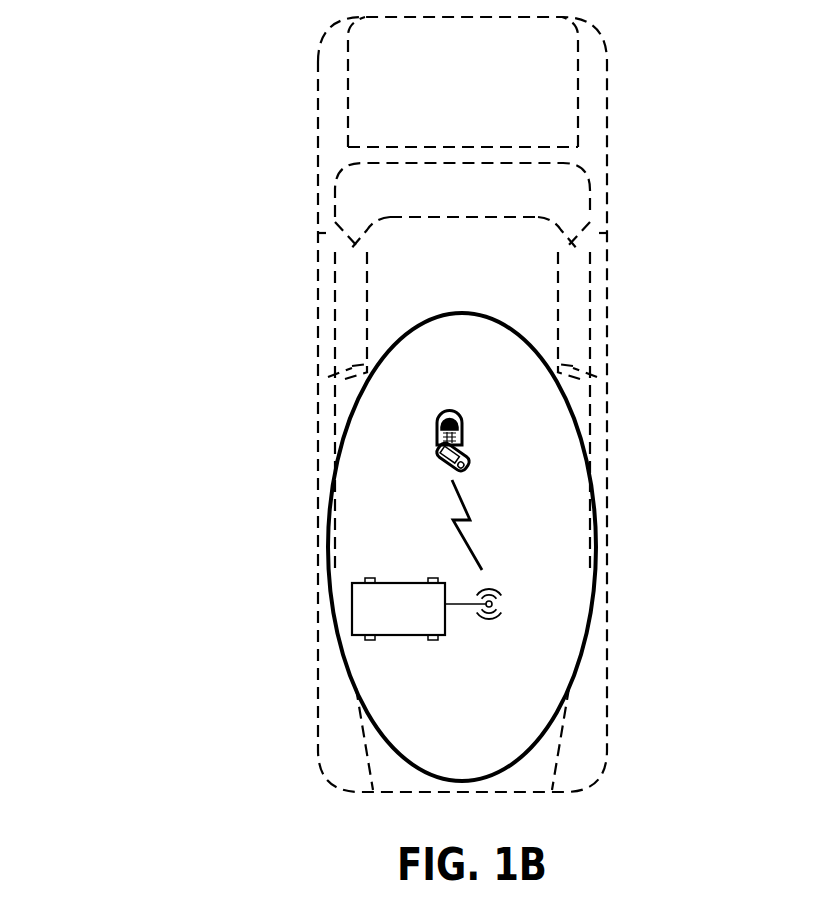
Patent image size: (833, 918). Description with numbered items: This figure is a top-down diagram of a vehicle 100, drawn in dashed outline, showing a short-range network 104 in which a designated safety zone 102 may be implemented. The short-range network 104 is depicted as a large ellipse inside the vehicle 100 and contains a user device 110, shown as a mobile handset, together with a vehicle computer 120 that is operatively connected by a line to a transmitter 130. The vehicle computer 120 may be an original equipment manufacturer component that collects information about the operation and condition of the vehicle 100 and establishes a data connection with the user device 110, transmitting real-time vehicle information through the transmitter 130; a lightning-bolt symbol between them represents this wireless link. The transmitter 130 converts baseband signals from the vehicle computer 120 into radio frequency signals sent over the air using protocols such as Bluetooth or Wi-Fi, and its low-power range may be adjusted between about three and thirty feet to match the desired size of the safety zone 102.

The vehicle 100 is at (168, 77).
The safety zone 102 is at (332, 684).
The short-range network 104 is at (590, 493).
The user device 110 is at (420, 418).
The vehicle computer 120 is at (352, 586).
The transmitter 130 is at (530, 604).